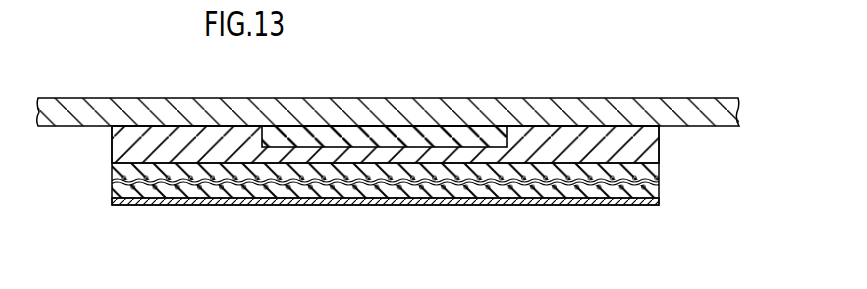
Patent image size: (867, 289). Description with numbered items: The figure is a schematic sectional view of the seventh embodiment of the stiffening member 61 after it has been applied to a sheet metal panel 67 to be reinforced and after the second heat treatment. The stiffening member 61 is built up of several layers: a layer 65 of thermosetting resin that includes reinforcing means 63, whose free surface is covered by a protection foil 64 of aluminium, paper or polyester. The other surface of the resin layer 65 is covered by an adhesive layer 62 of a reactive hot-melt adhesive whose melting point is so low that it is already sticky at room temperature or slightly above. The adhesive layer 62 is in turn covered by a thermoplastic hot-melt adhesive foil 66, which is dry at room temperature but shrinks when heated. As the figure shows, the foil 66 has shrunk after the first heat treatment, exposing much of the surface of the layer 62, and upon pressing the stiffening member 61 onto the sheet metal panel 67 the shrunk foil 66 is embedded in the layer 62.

The stiffening member 61 is at (93, 187).
The adhesive layer 62 is at (640, 150).
The reinforcing means 63 is at (642, 192).
The protection foil 64 is at (571, 207).
The thermosetting resin layer 65 is at (644, 172).
The thermoplastic hot-melt adhesive foil 66 is at (438, 135).
The sheet metal panel 67 is at (151, 107).